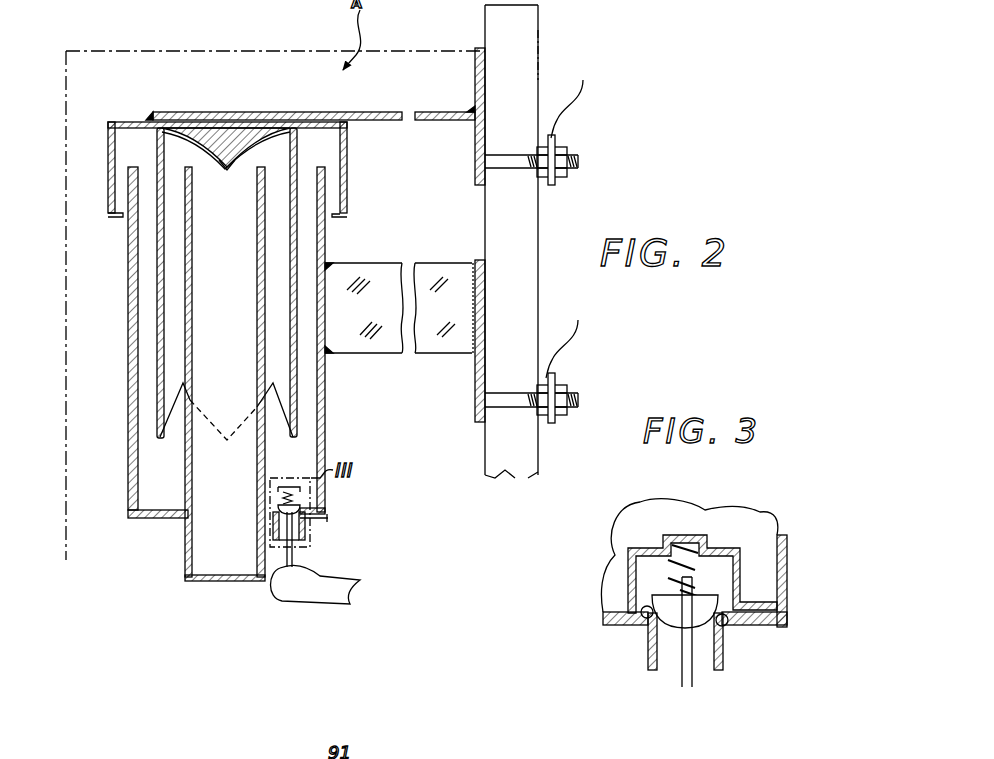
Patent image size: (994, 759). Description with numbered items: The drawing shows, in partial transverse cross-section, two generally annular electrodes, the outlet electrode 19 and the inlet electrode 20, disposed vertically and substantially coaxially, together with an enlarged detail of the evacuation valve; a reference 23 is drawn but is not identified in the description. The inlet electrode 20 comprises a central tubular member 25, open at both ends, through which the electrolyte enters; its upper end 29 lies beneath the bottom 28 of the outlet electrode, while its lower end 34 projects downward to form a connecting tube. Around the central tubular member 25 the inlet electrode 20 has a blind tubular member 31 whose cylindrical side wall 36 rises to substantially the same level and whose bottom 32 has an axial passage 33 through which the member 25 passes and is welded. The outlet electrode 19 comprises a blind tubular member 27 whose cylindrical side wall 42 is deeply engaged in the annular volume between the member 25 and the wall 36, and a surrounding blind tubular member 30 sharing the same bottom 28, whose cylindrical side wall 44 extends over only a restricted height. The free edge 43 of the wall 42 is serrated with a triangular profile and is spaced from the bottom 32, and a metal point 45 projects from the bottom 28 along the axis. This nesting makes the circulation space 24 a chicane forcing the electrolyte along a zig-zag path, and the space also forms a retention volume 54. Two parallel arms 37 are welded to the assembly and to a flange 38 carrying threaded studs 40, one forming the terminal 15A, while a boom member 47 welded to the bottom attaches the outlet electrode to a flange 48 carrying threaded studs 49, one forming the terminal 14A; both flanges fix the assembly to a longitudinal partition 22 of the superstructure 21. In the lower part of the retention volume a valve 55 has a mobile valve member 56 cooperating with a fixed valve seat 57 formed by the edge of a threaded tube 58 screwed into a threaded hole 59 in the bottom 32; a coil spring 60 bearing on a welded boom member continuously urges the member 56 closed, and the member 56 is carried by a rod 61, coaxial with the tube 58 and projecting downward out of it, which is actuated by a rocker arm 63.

In FIG. 2, the terminal 14A is at (579, 148).
In FIG. 2, the terminal 15A is at (579, 385).
In FIG. 2, the outlet electrode 19 is at (107, 107).
In FIG. 2, the inlet electrode 20 is at (126, 511).
In FIG. 3, the inlet electrode 20 is at (794, 540).
In FIG. 2, the superstructure 21 is at (547, 79).
In FIG. 2, the longitudinal partition 22 is at (545, 48).
In FIG. 2, the boundary line 23 is at (128, 63).
In FIG. 2, the circulation space 24 is at (161, 455).
In FIG. 2, the central tubular member 25 is at (194, 583).
In FIG. 2, the blind tubular member 27 is at (155, 141).
In FIG. 2, the bottom 28 is at (203, 127).
In FIG. 2, the upper end 29 is at (276, 170).
In FIG. 2, the blind tubular member 30 is at (105, 209).
In FIG. 2, the blind tubular member 31 is at (155, 520).
In FIG. 3, the blind tubular member 31 is at (788, 582).
In FIG. 2, the bottom 32 is at (173, 520).
In FIG. 3, the bottom 32 is at (775, 624).
In FIG. 2, the axial passage 33 is at (196, 514).
In FIG. 2, the lower end 34 is at (273, 572).
In FIG. 2, the cylindrical side wall 36 is at (130, 332).
In FIG. 2, the arm 37 is at (380, 270).
In FIG. 2, the flange 38 is at (478, 262).
In FIG. 2, the threaded stud 40 is at (510, 394).
In FIG. 2, the cylindrical side wall 42 is at (157, 272).
In FIG. 2, the free edge 43 is at (168, 405).
In FIG. 2, the cylindrical side wall 44 is at (110, 177).
In FIG. 2, the metal point 45 is at (219, 160).
In FIG. 2, the boom member 47 is at (243, 114).
In FIG. 2, the flange 48 is at (474, 60).
In FIG. 2, the threaded stud 49 is at (510, 156).
In FIG. 2, the retention volume 54 is at (325, 434).
In FIG. 2, the valve 55 is at (265, 494).
In FIG. 3, the valve 55 is at (590, 582).
In FIG. 2, the mobile valve member 56 is at (302, 520).
In FIG. 3, the mobile valve member 56 is at (672, 620).
In FIG. 3, the fixed valve seat 57 is at (646, 617).
In FIG. 3, the threaded tube 58 is at (722, 670).
In FIG. 3, the threaded hole 59 is at (724, 625).
In FIG. 3, the coil spring 60 is at (690, 540).
In FIG. 2, the rod 61 is at (301, 538).
In FIG. 3, the rod 61 is at (652, 540).
In FIG. 2, the rocker arm 63 is at (312, 607).